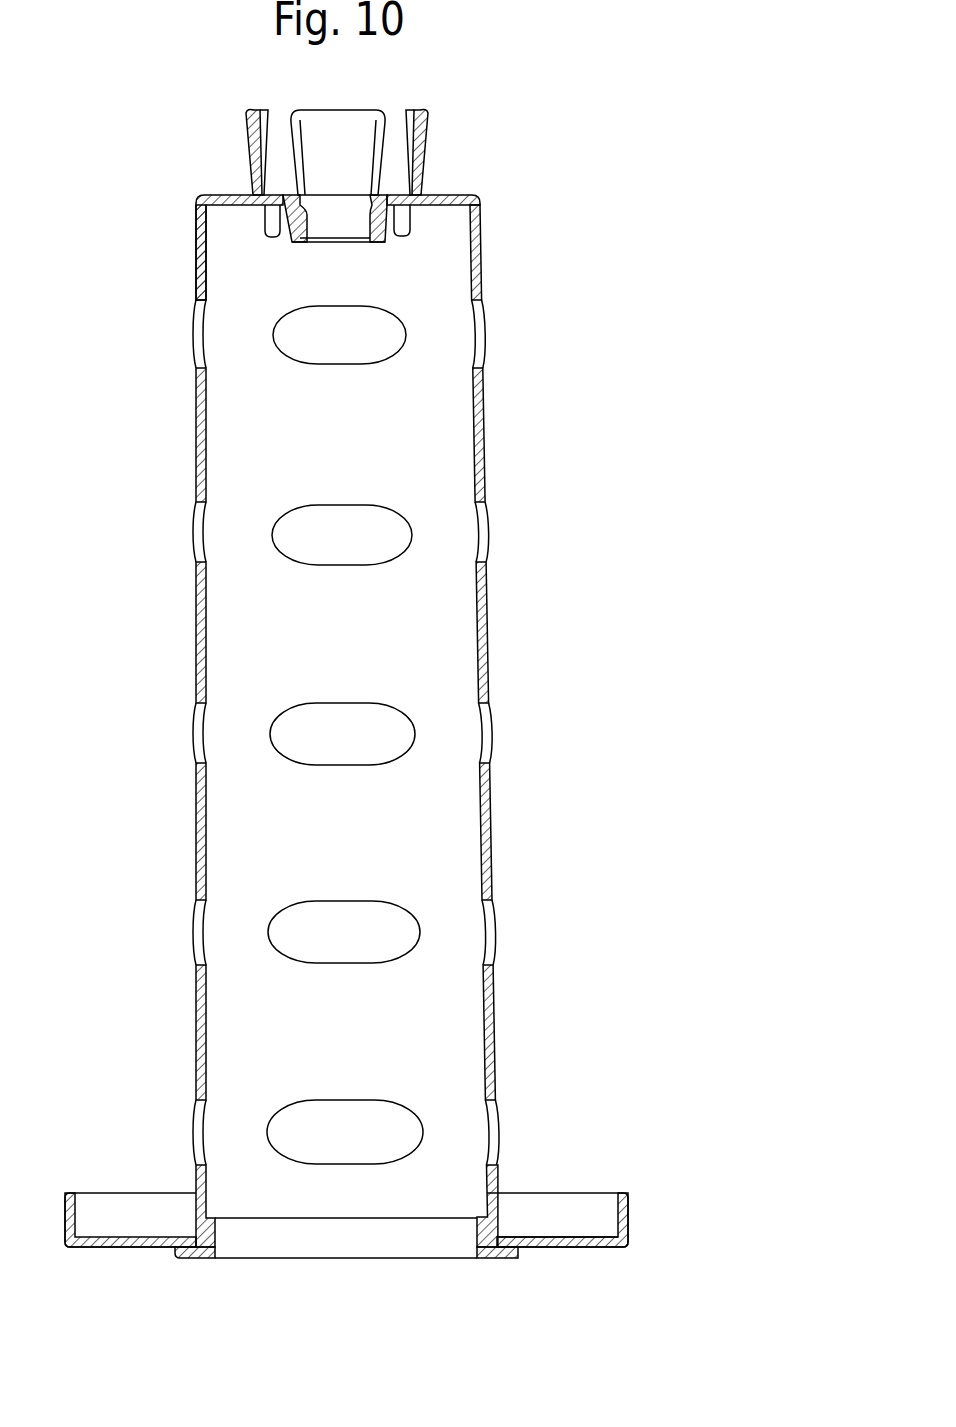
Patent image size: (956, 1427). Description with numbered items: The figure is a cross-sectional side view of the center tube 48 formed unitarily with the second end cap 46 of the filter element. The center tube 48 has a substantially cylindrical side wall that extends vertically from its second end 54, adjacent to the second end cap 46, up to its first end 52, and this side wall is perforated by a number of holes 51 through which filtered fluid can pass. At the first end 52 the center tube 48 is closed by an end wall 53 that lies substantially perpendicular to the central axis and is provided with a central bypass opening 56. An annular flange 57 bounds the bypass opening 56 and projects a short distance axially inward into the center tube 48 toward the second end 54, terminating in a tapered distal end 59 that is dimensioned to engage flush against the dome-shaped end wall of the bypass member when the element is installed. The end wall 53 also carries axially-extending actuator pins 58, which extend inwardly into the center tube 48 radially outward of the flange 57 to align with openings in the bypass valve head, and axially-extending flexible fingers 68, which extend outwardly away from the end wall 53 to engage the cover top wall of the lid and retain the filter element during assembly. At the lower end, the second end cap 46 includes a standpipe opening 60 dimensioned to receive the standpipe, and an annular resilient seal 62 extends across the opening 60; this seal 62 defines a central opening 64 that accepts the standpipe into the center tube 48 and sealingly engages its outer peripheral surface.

The second end cap 46 is at (628, 1222).
The center tube 48 is at (485, 448).
The holes 51 is at (489, 735).
The first end 52 is at (482, 236).
The end wall 53 is at (454, 191).
The second end 54 is at (498, 1214).
The central bypass opening 56 is at (340, 235).
The annular flange 57 is at (314, 241).
The actuator pins 58 is at (263, 220).
The tapered distal end 59 is at (385, 245).
The standpipe opening 60 is at (483, 1198).
The resilient seal 62 is at (195, 1260).
The central opening 64 is at (287, 1240).
The flexible fingers 68 is at (333, 128).